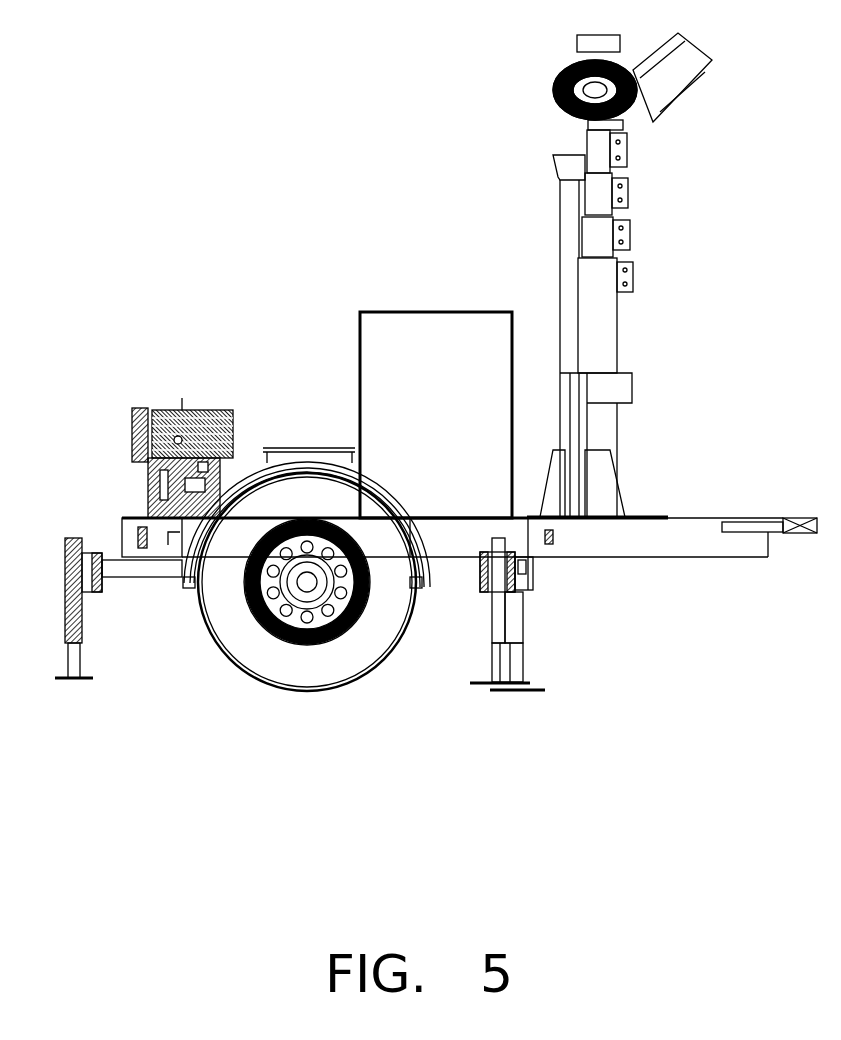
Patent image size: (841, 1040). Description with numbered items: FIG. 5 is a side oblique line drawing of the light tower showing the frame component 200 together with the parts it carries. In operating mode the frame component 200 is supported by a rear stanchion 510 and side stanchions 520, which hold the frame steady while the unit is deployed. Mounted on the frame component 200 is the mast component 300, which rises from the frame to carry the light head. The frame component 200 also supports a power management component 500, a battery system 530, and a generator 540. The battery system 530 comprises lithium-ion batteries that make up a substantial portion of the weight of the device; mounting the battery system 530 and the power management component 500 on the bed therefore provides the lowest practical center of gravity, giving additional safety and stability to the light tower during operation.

The frame component 200 is at (728, 507).
The mast component 300 is at (682, 281).
The power management component 500 is at (418, 312).
The rear stanchion 510 is at (78, 623).
The side stanchions 520 is at (492, 633).
The battery system 530 is at (305, 448).
The generator 540 is at (133, 412).